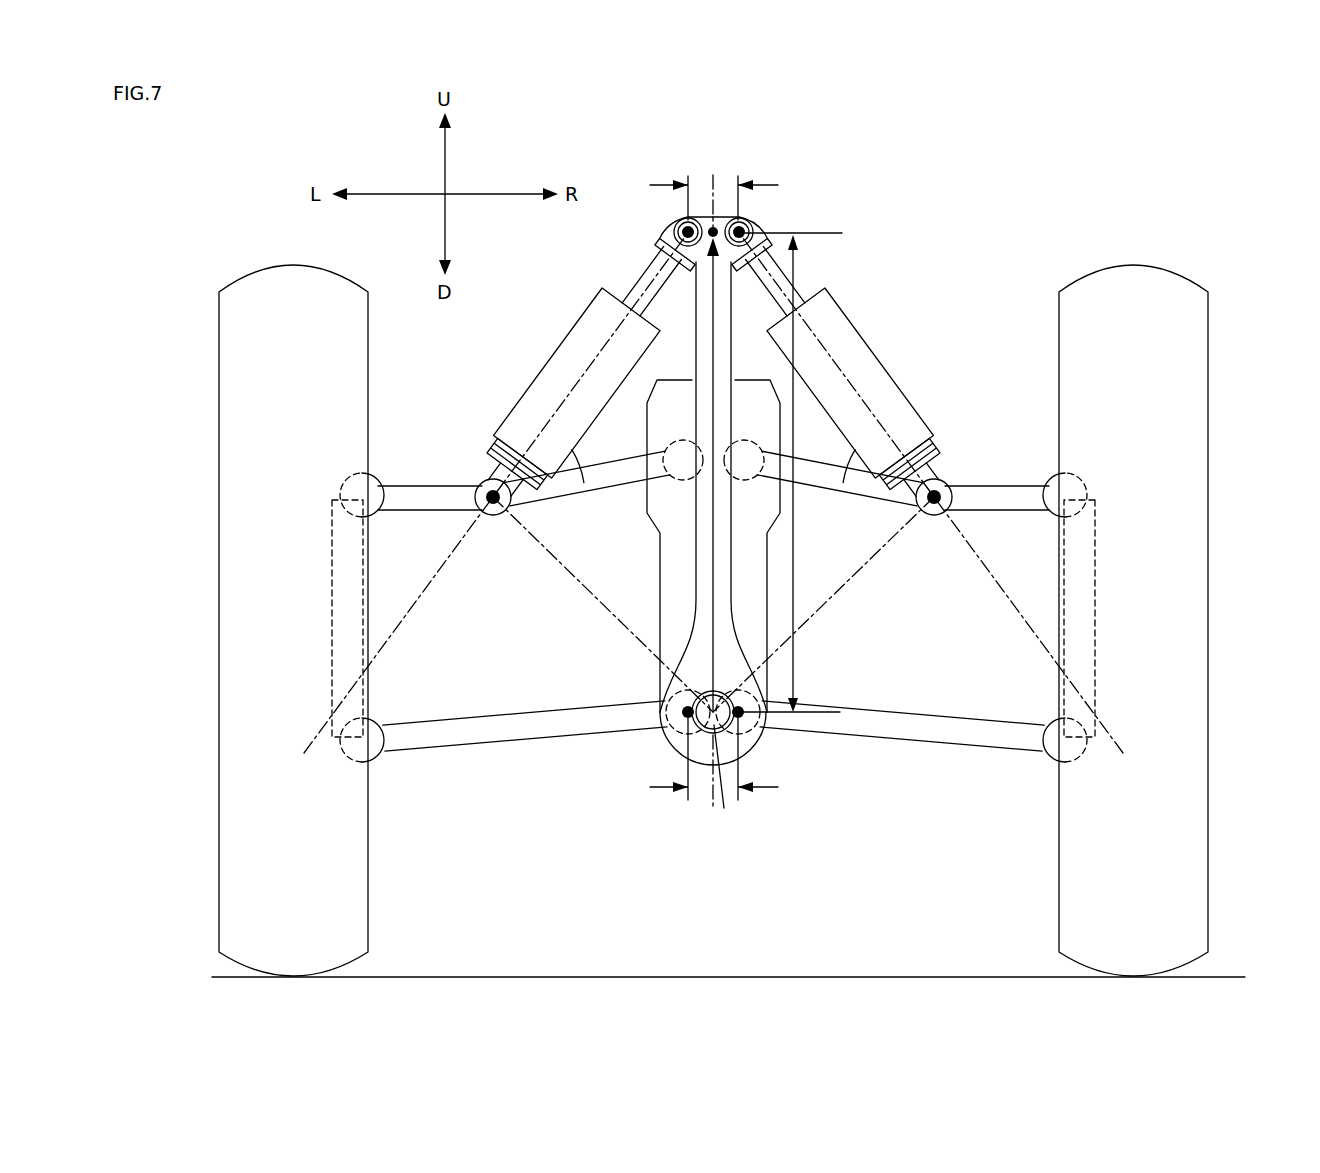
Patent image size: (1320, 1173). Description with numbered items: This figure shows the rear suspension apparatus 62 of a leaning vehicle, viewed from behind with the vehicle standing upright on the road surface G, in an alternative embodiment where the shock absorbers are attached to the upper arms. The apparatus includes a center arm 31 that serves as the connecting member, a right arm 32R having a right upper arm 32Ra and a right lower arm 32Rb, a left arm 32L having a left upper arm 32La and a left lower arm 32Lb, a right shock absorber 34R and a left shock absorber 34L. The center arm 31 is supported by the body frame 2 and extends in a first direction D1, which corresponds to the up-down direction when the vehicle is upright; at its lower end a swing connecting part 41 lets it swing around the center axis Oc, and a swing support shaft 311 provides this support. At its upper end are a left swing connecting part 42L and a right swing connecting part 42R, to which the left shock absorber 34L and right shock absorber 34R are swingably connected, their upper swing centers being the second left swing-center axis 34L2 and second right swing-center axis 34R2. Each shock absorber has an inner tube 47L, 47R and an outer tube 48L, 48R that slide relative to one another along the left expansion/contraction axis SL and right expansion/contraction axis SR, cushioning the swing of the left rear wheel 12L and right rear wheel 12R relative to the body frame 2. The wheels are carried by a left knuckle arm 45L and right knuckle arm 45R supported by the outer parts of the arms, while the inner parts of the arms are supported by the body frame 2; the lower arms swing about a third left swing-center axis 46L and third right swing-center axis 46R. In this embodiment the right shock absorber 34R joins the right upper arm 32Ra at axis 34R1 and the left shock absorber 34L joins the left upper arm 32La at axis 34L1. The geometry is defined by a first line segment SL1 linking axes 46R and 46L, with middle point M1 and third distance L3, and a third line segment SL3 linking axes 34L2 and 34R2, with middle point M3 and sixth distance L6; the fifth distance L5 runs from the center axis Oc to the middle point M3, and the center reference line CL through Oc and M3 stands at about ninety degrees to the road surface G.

The body frame 2 is at (690, 380).
The left rear wheel 12L is at (246, 276).
The right rear wheel 12R is at (1190, 280).
The center arm 31 is at (697, 328).
The swing support shaft 311 is at (726, 809).
The left arm 32L is at (376, 601).
The left upper arm 32La is at (404, 514).
The left lower arm 32Lb is at (418, 733).
The right arm 32R is at (1038, 601).
The right upper arm 32Ra is at (1022, 542).
The right lower arm 32Rb is at (1024, 695).
The left shock absorber 34L is at (571, 402).
The right shock absorber 34R is at (853, 402).
The axis 34L1 is at (487, 518).
The axis 34R1 is at (937, 518).
The second left swing-center axis 34L2 is at (669, 240).
The second right swing-center axis 34R2 is at (754, 233).
The swing connecting part 41 is at (749, 753).
The left swing connecting part 42L is at (676, 222).
The right swing connecting part 42R is at (750, 224).
The left knuckle arm 45L is at (332, 544).
The right knuckle arm 45R is at (1095, 544).
The third left swing-center axis 46L is at (660, 701).
The third right swing-center axis 46R is at (765, 736).
The inner tube 47L is at (645, 273).
The inner tube 47R is at (793, 276).
The outer tube 48L is at (521, 391).
The outer tube 48R is at (896, 384).
The rear suspension apparatus 62 is at (910, 258).
The road surface G is at (1218, 977).
The center reference line CL is at (710, 800).
The first direction D1 is at (712, 578).
The third distance L3 is at (720, 764).
The fifth distance L5 is at (797, 638).
The sixth distance L6 is at (779, 172).
The middle point M3 is at (714, 186).
The middle point M1 is at (618, 788).
The center axis Oc is at (702, 721).
The left expansion/contraction axis SL is at (392, 637).
The right expansion/contraction axis SR is at (1042, 651).
The first line segment SL1 is at (830, 715).
The third line segment SL3 is at (814, 233).